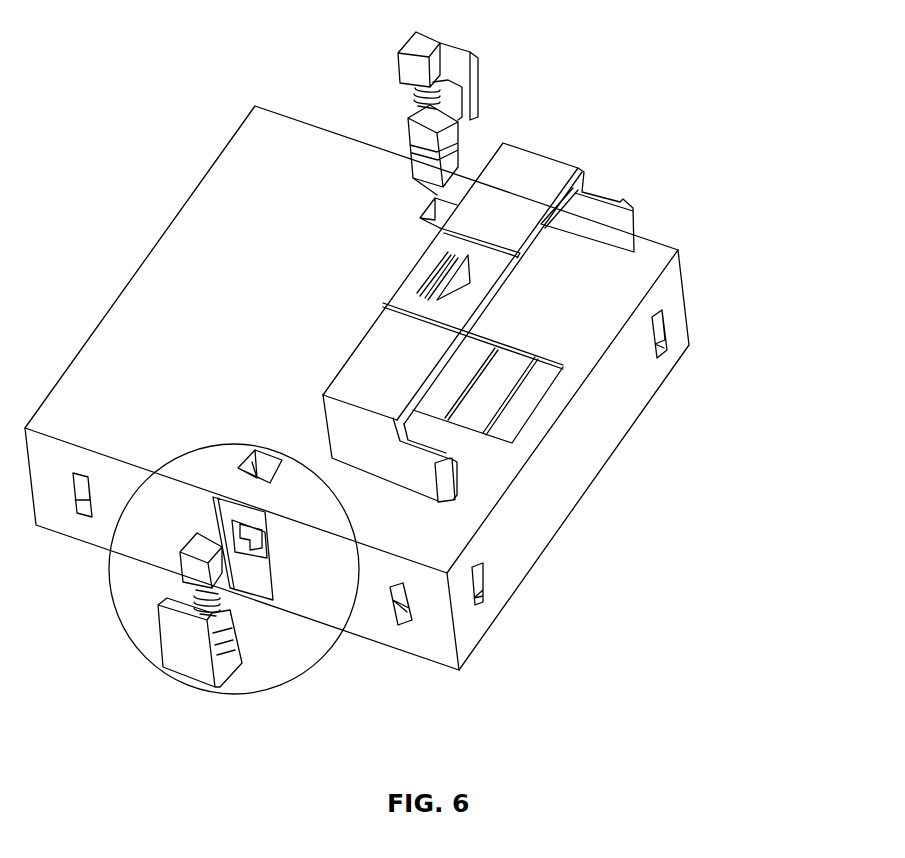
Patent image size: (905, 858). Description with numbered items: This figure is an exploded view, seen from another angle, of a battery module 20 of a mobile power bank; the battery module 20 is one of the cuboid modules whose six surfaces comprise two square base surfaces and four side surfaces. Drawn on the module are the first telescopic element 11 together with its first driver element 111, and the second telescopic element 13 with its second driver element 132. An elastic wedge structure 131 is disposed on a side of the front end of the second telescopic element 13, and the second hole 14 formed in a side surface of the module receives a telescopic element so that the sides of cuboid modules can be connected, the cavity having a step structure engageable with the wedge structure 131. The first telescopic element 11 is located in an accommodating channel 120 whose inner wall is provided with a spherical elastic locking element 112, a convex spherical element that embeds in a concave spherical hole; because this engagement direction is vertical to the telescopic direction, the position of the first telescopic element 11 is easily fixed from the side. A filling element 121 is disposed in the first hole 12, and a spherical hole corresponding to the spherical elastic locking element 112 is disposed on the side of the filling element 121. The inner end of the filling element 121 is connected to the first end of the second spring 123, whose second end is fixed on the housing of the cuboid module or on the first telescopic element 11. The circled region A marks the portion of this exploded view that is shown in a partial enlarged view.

The battery module 20 is at (138, 216).
The second telescopic element 13 is at (348, 358).
The wedge structure 131 is at (646, 228).
The second driver element 132 is at (426, 270).
The second hole 14 is at (672, 334).
The first hole 12 is at (268, 458).
The spherical elastic locking element 112 is at (250, 452).
The accommodating channel 120 is at (268, 578).
The filling element 121 is at (190, 545).
The second spring 123 is at (196, 598).
The first driver element 111 is at (180, 660).
The first telescopic element 11 is at (344, 386).
The partial enlarged region A is at (110, 610).